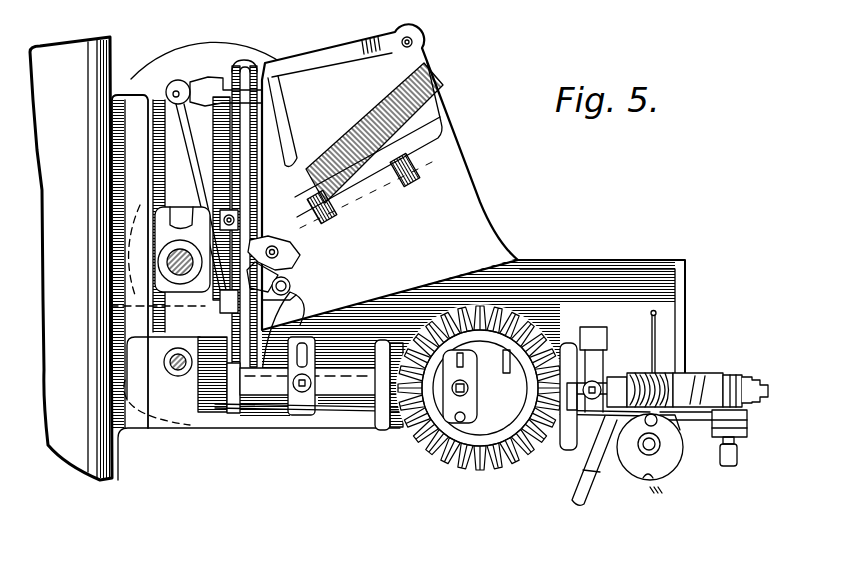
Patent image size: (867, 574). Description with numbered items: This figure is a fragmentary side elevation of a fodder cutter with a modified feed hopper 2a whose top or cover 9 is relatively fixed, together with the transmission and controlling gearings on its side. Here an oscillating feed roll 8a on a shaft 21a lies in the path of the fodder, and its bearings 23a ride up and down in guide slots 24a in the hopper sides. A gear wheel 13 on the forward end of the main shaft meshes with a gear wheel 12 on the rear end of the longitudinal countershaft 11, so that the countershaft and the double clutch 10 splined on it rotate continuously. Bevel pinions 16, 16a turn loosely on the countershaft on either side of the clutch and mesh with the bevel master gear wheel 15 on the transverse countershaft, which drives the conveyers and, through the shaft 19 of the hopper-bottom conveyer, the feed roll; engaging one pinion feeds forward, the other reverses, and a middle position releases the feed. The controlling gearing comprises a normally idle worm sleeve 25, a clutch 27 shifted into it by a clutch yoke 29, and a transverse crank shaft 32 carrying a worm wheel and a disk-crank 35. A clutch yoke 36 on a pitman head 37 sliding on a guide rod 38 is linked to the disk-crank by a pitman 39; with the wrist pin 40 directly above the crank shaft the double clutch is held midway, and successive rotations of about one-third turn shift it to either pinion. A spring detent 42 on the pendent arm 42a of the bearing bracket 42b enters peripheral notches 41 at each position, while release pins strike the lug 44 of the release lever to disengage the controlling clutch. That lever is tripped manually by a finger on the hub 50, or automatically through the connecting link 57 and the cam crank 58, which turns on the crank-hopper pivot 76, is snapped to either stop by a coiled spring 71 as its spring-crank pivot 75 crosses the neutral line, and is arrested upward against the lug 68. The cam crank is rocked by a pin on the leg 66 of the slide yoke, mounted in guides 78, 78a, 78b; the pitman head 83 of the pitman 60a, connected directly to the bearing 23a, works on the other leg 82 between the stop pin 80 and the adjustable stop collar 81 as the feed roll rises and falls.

The feed hopper 2a is at (366, 206).
The oscillating feed roll 8a is at (157, 245).
The top or cover of the feed hopper 9 is at (388, 113).
The double clutch 10 is at (440, 480).
The longitudinal countershaft 11 is at (765, 383).
The gear wheel 12 is at (197, 403).
The gear wheel 13 is at (195, 373).
The bevel master gear wheel 15 is at (463, 480).
The bevel pinion 16 is at (563, 420).
The bevel pinion 16a is at (383, 437).
The shaft of the hopper-bottom conveyer 19 is at (165, 382).
The shaft of the oscillating feed roll 21a is at (168, 262).
The bearings 23a is at (147, 243).
The guide slots 24a is at (157, 90).
The worm sleeve 25 is at (653, 370).
The clutch 27 is at (713, 383).
The clutch yoke 29 is at (732, 383).
The transverse crank shaft 32 is at (613, 473).
The disk-crank 35 is at (660, 450).
The clutch yoke 36 is at (442, 317).
The pitman head 37 is at (447, 468).
The guide rod 38 is at (350, 395).
The pitman 39 is at (483, 477).
The wrist pin 40 is at (655, 422).
The peripheral notches 41 is at (648, 476).
The spring detent 42 is at (600, 500).
The pendent arm 42a is at (570, 462).
The bearing bracket 42b is at (598, 385).
The lug 44 is at (233, 313).
The hub 50 is at (250, 62).
The connecting link 57 is at (283, 297).
The cam crank 58 is at (302, 268).
The pitman 60a is at (207, 296).
The leg of the slide yoke 66 is at (272, 160).
The lug 68 is at (308, 240).
The coiled spring 71 is at (305, 293).
The spring-crank pivot 75 is at (340, 272).
The crank-hopper pivot 76 is at (300, 255).
The guide 78 is at (313, 45).
The guide 78a is at (266, 148).
The guide 78b is at (238, 413).
The stop pin 80 is at (180, 337).
The stop collar 81 is at (222, 212).
The leg of the slide yoke 82 is at (230, 127).
The pitman head 83 is at (205, 312).